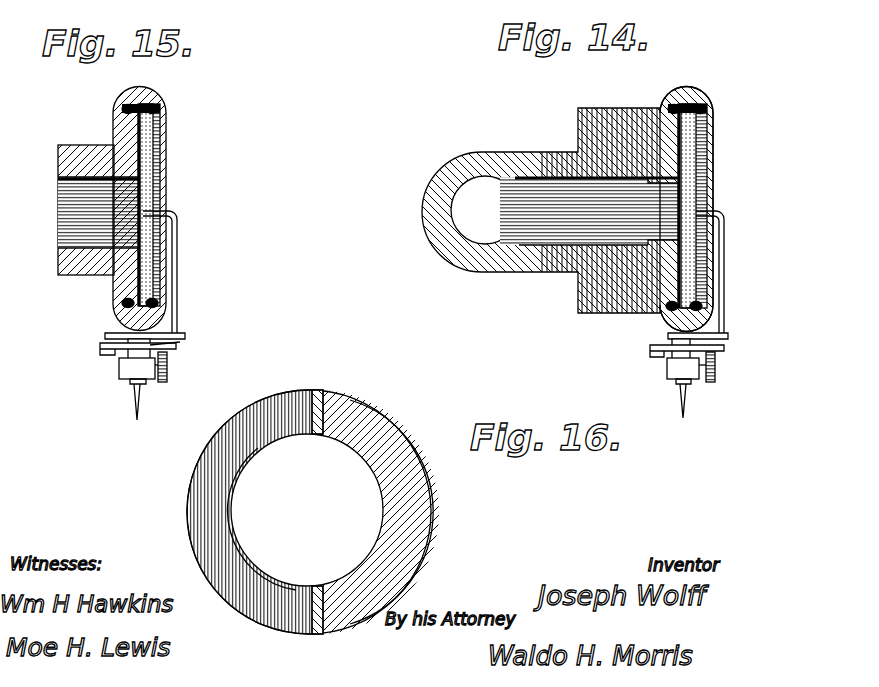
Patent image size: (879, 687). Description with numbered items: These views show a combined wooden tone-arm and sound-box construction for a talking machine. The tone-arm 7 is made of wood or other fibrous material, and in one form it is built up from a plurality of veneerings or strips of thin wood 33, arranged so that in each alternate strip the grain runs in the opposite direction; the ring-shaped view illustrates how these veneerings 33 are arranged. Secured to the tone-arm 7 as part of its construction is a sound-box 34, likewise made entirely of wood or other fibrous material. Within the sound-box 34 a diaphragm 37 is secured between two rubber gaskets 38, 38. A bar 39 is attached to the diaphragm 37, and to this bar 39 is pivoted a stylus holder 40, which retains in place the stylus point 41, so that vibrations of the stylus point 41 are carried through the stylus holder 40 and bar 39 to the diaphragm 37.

In FIG. 14, the tone-arm 7 is at (486, 150).
In FIG. 16, the veneerings or strips of thin wood 33 is at (210, 440).
In FIG. 14, the sound-box 34 is at (688, 86).
In FIG. 15, the diaphragm 37 is at (150, 156).
In FIG. 14, the diaphragm 37 is at (695, 158).
In FIG. 15, the rubber gaskets 38 is at (122, 108).
In FIG. 14, the rubber gaskets 38 is at (668, 107).
In FIG. 15, the bar 39 is at (178, 262).
In FIG. 14, the bar 39 is at (724, 297).
In FIG. 15, the stylus holder 40 is at (160, 349).
In FIG. 14, the stylus holder 40 is at (700, 350).
In FIG. 15, the stylus point 41 is at (140, 400).
In FIG. 14, the stylus point 41 is at (686, 404).